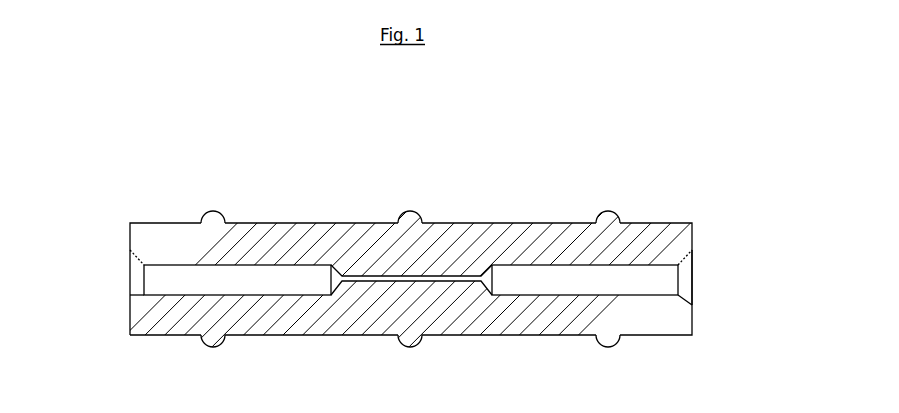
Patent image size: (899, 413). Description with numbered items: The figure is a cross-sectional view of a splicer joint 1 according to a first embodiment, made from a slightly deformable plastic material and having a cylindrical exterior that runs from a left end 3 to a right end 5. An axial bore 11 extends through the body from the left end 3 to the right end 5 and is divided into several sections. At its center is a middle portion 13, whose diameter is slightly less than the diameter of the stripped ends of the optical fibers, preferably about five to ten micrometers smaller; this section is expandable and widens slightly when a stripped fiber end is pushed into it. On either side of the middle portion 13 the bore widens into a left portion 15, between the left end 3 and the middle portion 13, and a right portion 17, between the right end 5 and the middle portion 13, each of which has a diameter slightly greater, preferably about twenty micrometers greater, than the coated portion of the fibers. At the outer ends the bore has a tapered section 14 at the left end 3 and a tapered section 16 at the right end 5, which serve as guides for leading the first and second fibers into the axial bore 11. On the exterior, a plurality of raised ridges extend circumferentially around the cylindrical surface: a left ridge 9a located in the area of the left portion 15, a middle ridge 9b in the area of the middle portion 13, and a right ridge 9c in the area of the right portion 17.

The splicer joint 1 is at (406, 217).
The left end 3 is at (94, 213).
The right end 5 is at (723, 209).
The left ridge 9a is at (245, 247).
The middle ridge 9b is at (443, 248).
The right ridge 9c is at (646, 247).
The axial bore 11 is at (770, 277).
The middle portion 13 is at (431, 328).
The tapered section 14 is at (87, 282).
The left portion 15 is at (237, 328).
The tapered section 16 is at (727, 297).
The right portion 17 is at (585, 328).